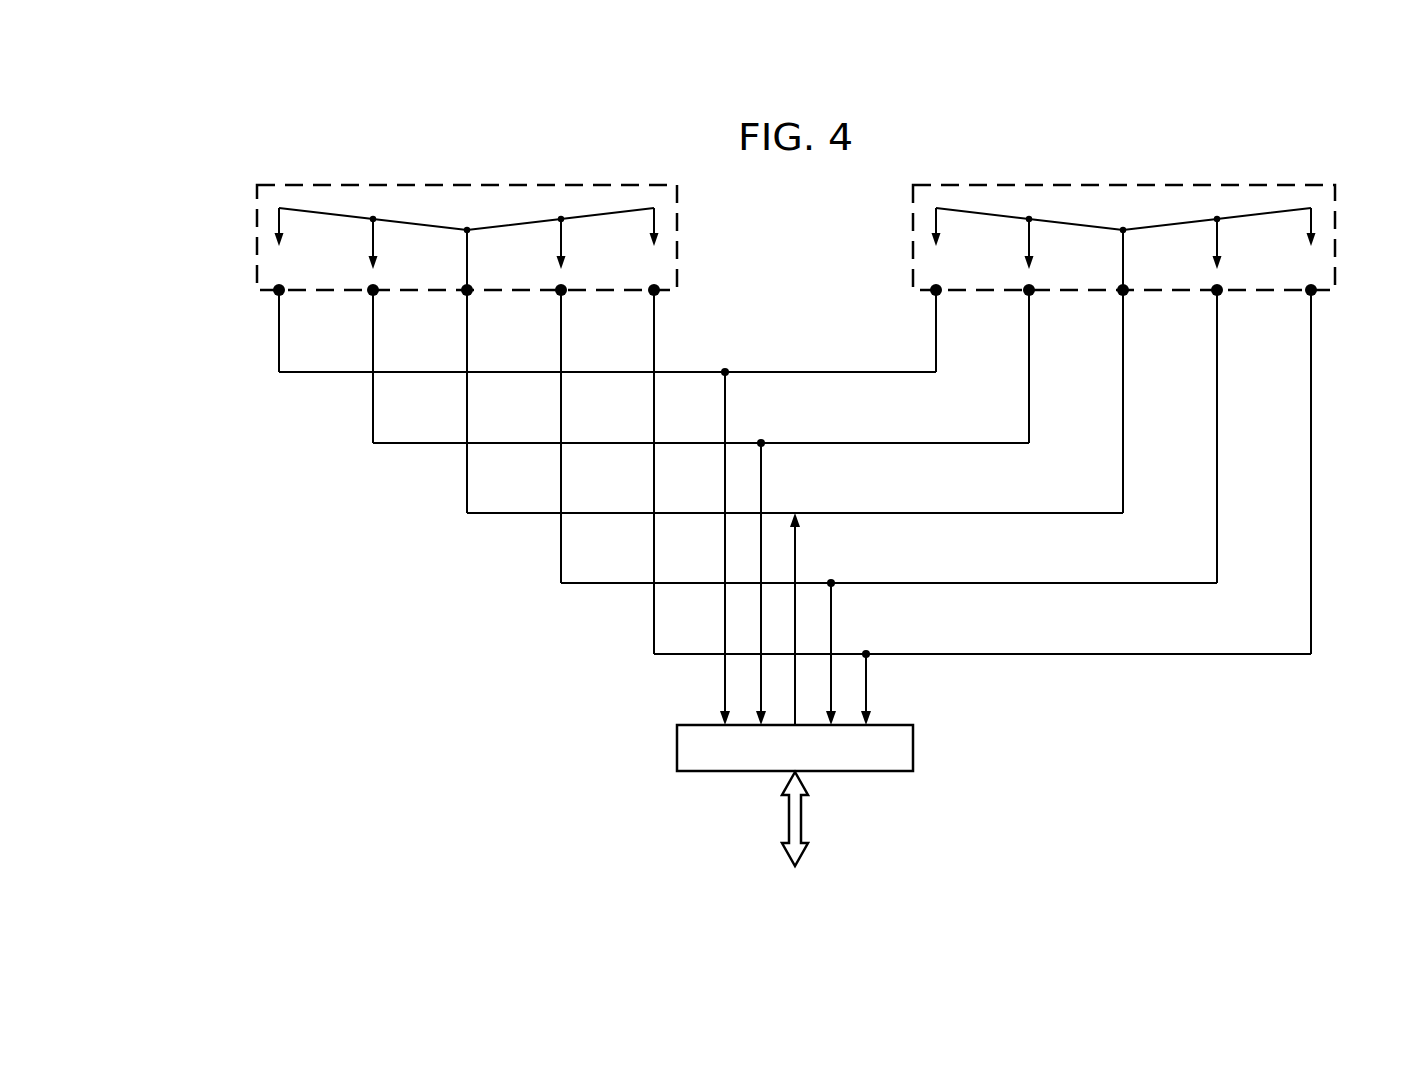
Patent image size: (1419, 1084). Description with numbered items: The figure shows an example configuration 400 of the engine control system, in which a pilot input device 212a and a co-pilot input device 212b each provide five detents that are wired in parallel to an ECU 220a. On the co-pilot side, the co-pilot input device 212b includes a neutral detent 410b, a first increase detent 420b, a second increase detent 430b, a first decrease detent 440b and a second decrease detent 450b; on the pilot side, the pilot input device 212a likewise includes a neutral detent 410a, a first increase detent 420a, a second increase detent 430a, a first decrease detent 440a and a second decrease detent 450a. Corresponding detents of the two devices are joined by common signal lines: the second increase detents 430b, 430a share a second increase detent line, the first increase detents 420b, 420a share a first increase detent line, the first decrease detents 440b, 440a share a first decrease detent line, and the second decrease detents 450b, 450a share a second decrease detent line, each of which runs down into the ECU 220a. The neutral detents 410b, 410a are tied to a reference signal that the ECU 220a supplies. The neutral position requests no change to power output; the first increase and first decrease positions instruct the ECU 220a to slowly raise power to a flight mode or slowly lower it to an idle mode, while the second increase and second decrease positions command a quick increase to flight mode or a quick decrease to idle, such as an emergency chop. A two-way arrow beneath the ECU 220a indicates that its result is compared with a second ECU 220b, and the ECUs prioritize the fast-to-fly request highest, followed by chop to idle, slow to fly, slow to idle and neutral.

The example configuration 400 is at (614, 132).
The co-pilot input device 212b is at (343, 183).
The pilot input device 212a is at (1248, 185).
The second increase detent 430b is at (273, 303).
The first increase detent 420b is at (367, 303).
The neutral detent 410b is at (461, 303).
The first decrease detent 440b is at (555, 303).
The second decrease detent 450b is at (648, 303).
The second increase detent 430a is at (941, 302).
The first increase detent 420a is at (1034, 302).
The neutral detent 410a is at (1128, 302).
The first decrease detent 440a is at (1222, 302).
The second decrease detent 450a is at (1316, 302).
The ECU 220a is at (677, 760).
The ECU 220b is at (795, 849).